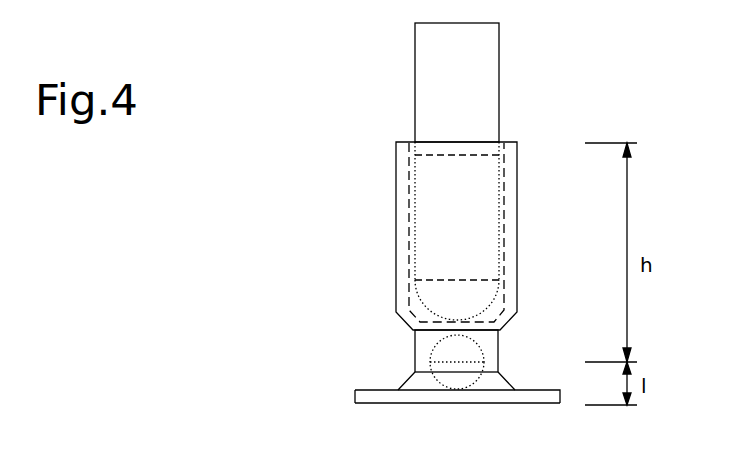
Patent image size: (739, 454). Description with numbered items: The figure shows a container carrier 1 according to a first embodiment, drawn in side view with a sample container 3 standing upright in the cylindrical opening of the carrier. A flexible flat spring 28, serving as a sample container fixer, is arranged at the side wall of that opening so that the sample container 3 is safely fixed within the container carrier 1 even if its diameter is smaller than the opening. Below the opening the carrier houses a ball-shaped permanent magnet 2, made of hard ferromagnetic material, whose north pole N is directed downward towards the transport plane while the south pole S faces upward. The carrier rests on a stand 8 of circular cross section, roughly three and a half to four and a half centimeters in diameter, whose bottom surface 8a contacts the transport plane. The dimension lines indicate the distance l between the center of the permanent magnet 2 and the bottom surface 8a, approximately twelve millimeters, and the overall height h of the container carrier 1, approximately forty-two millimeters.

The container carrier 1 is at (365, 147).
The permanent magnet 2 is at (445, 360).
The sample container 3 is at (415, 70).
The stand 8 is at (392, 395).
The bottom surface 8a is at (415, 403).
The flexible flat spring 28 is at (415, 175).